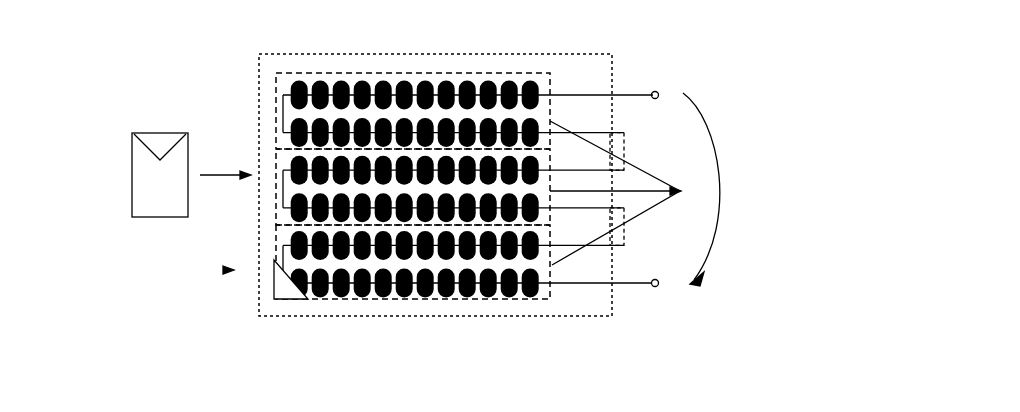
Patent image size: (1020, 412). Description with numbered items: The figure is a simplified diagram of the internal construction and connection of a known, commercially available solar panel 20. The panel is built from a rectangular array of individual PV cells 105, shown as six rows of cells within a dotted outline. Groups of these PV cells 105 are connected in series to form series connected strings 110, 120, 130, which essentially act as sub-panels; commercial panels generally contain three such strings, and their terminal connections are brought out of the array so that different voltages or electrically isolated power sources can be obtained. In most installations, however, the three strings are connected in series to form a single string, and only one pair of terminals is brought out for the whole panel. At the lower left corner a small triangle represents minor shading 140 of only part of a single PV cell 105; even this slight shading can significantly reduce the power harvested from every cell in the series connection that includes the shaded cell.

The solar panel 20 is at (258, 84).
The PV cell 105 is at (357, 297).
The series connected string 110 is at (228, 113).
The series connected string 120 is at (238, 200).
The series connected string 130 is at (228, 270).
The minor shading 140 is at (276, 292).